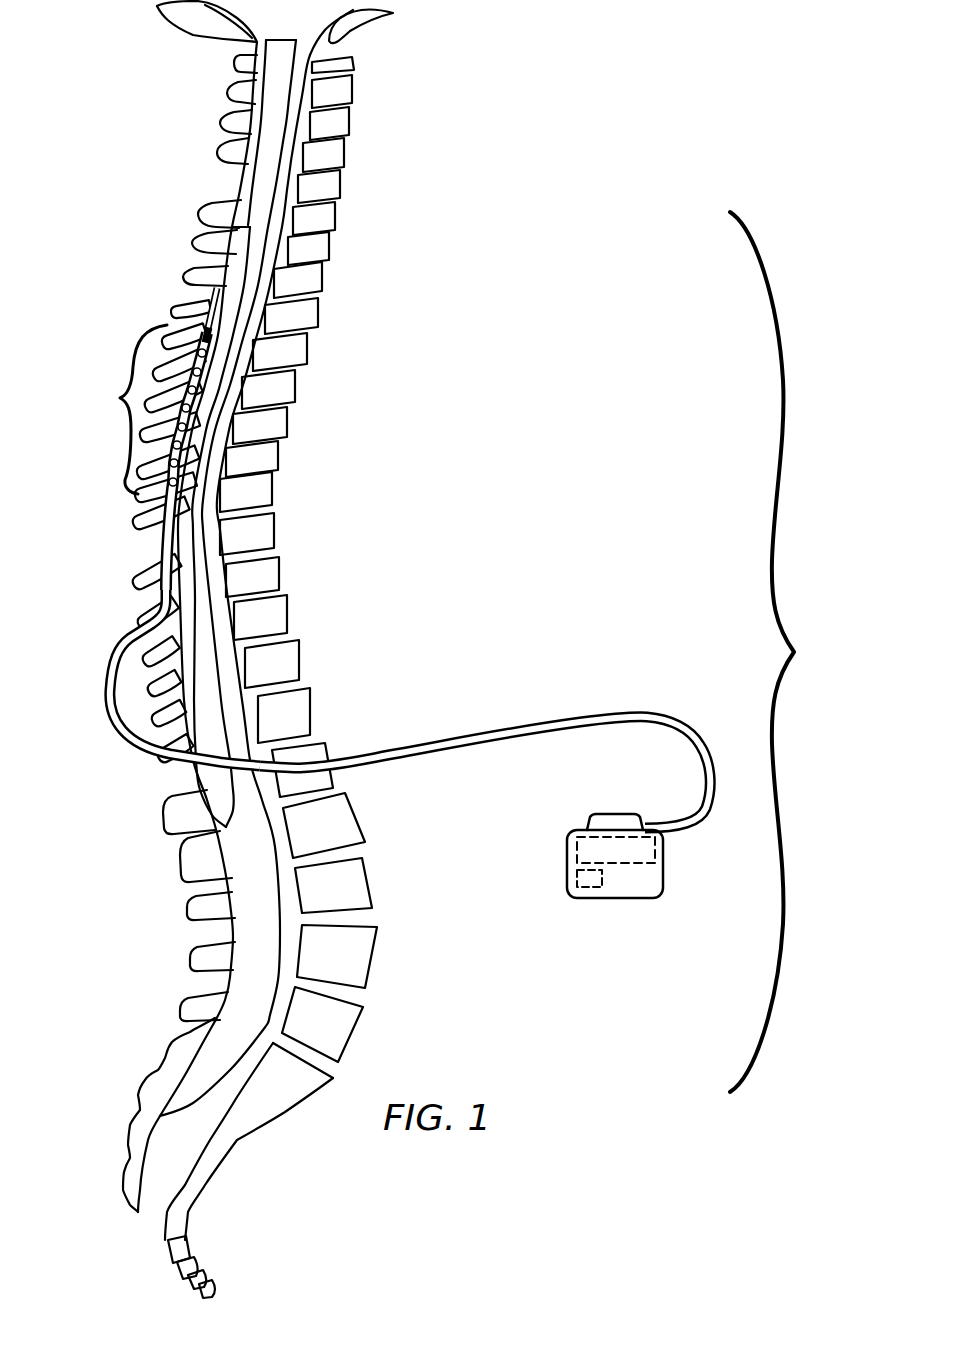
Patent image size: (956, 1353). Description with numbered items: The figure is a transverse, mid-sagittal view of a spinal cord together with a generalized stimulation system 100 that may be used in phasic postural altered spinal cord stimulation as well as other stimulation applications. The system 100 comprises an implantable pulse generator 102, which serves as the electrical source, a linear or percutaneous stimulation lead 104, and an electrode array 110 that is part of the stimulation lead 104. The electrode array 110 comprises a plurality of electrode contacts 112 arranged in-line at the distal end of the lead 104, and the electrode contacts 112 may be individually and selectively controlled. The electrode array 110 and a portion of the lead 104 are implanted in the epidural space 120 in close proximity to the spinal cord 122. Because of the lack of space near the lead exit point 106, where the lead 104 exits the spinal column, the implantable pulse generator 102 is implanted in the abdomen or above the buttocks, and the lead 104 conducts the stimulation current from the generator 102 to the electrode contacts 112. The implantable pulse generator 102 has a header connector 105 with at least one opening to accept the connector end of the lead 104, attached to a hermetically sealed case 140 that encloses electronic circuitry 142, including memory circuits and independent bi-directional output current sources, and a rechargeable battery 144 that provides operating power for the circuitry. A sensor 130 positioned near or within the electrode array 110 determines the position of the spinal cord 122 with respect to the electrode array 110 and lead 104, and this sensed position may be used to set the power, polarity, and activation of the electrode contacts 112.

The stimulation system 100 is at (783, 652).
The implantable pulse generator 102 is at (620, 857).
The stimulation lead 104 is at (522, 722).
The header connector 105 is at (608, 814).
The lead exit point 106 is at (108, 712).
The electrode array 110 is at (217, 417).
The electrode contacts 112 is at (205, 352).
The epidural space 120 is at (213, 296).
The spinal cord 122 is at (248, 247).
The sensor 130 is at (193, 418).
The hermetically sealed case 140 is at (663, 875).
The electronic circuitry 142 is at (660, 847).
The rechargeable battery 144 is at (577, 877).